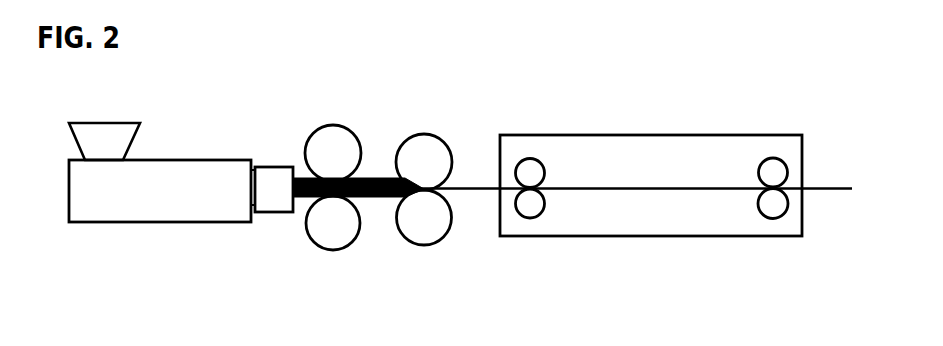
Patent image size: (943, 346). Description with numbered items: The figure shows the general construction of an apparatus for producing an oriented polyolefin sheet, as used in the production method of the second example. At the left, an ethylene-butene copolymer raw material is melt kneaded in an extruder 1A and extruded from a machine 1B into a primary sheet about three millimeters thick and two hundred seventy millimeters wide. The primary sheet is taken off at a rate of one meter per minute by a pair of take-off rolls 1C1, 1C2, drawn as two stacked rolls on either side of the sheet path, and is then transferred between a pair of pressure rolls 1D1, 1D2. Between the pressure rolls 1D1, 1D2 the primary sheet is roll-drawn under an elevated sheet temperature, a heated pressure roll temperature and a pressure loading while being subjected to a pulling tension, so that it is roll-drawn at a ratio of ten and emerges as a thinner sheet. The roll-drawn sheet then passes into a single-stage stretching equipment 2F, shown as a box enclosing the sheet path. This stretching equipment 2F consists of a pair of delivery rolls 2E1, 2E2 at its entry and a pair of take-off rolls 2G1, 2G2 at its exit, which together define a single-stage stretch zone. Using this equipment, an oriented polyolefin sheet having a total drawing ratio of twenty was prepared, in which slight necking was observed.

The extruder 1A is at (203, 177).
The machine 1B is at (270, 180).
The take-off roll 1C1 is at (333, 147).
The take-off roll 1C2 is at (337, 237).
The pressure roll 1D1 is at (425, 145).
The pressure roll 1D2 is at (430, 230).
The delivery roll 2E1 is at (530, 170).
The delivery roll 2E2 is at (532, 212).
The single-stage stretching equipment 2F is at (628, 155).
The take-off roll 2G1 is at (772, 168).
The take-off roll 2G2 is at (777, 207).